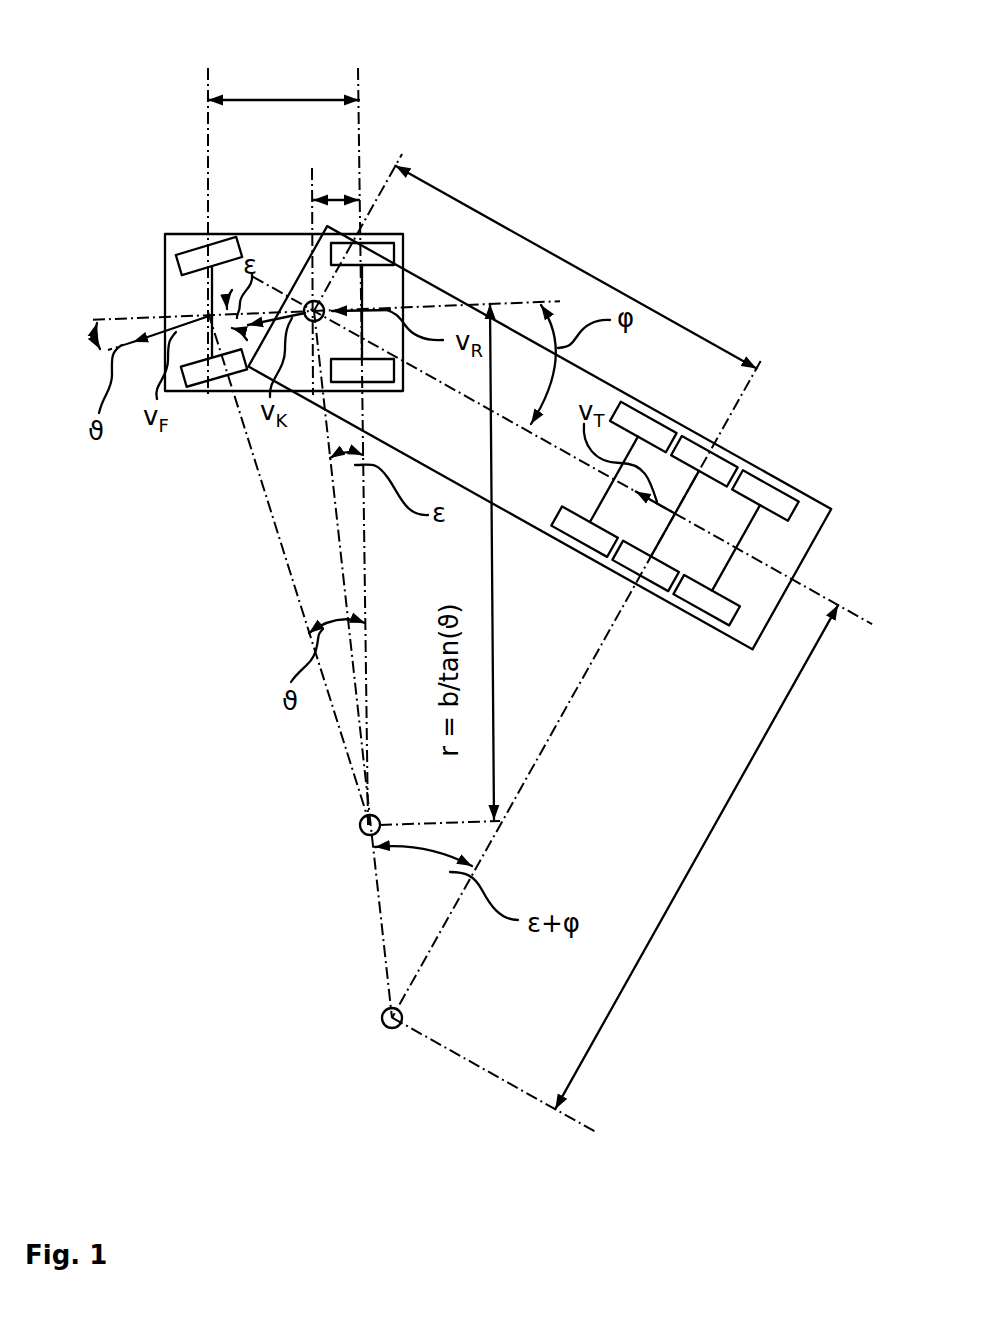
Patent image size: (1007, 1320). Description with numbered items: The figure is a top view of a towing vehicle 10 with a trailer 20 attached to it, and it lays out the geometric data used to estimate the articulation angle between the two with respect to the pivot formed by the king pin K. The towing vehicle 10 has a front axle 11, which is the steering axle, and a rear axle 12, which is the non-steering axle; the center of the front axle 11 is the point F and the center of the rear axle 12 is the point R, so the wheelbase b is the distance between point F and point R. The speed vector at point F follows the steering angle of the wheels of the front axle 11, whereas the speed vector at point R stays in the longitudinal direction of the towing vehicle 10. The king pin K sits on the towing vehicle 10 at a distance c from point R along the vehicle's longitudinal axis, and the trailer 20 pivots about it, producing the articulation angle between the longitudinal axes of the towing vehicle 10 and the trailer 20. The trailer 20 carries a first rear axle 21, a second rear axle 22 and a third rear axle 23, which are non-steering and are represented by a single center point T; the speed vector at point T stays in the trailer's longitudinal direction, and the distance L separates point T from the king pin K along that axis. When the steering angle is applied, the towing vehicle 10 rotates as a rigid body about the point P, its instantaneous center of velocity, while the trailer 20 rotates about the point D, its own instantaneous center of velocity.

The towing vehicle 10 is at (244, 258).
The front axle 11 is at (218, 389).
The rear axle 12 is at (378, 386).
The trailer 20 is at (503, 566).
The first rear axle 21 is at (574, 538).
The second rear axle 22 is at (636, 578).
The third rear axle 23 is at (692, 612).
The king pin K is at (309, 300).
The center of the front axle F is at (211, 316).
The center of the rear axle R is at (380, 308).
The center of the rear axles of the trailer T is at (680, 512).
The instantaneous center of velocity of the towing vehicle P is at (360, 824).
The instantaneous center of velocity of the trailer D is at (389, 1008).
The distance between point T and the king pin L is at (562, 263).
The wheelbase b is at (291, 98).
The distance between the king pin and point R c is at (336, 199).